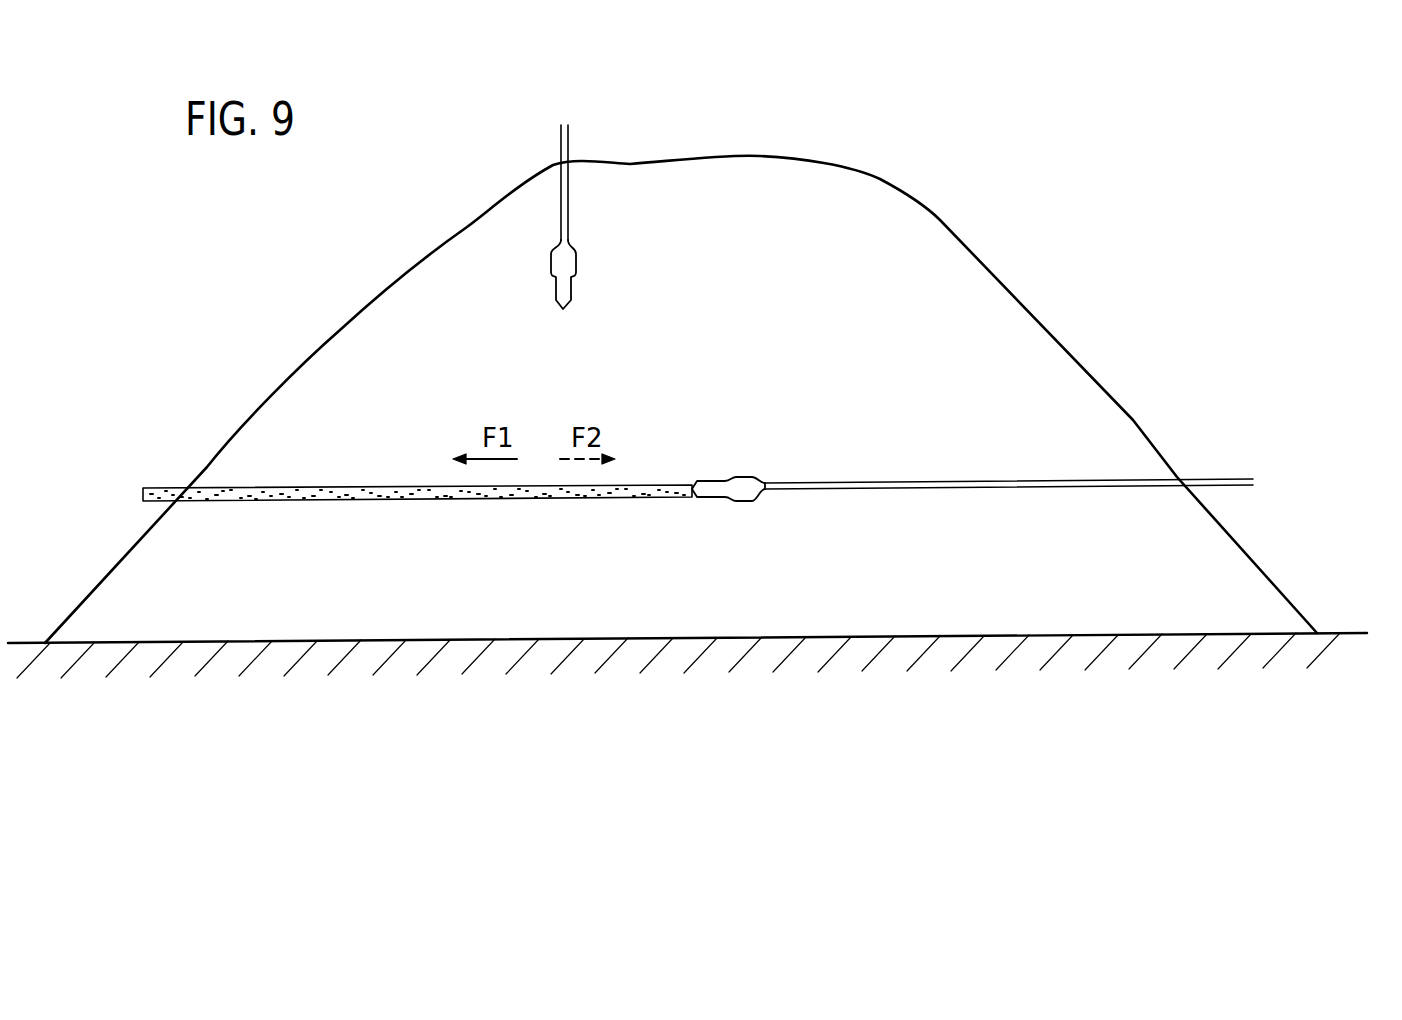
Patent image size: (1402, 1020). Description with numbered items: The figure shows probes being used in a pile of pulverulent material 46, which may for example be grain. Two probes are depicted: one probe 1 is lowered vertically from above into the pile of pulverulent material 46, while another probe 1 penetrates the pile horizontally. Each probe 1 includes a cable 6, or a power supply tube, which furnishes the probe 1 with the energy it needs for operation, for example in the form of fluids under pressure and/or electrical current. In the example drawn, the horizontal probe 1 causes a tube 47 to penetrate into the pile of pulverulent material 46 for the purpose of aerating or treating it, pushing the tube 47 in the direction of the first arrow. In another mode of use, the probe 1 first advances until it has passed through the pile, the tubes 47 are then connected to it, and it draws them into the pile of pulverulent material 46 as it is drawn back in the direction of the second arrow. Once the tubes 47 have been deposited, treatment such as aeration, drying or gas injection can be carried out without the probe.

The probe 1 is at (574, 283).
The cable 6 is at (568, 202).
The pile of pulverulent material 46 is at (937, 382).
The tube 47 is at (495, 501).